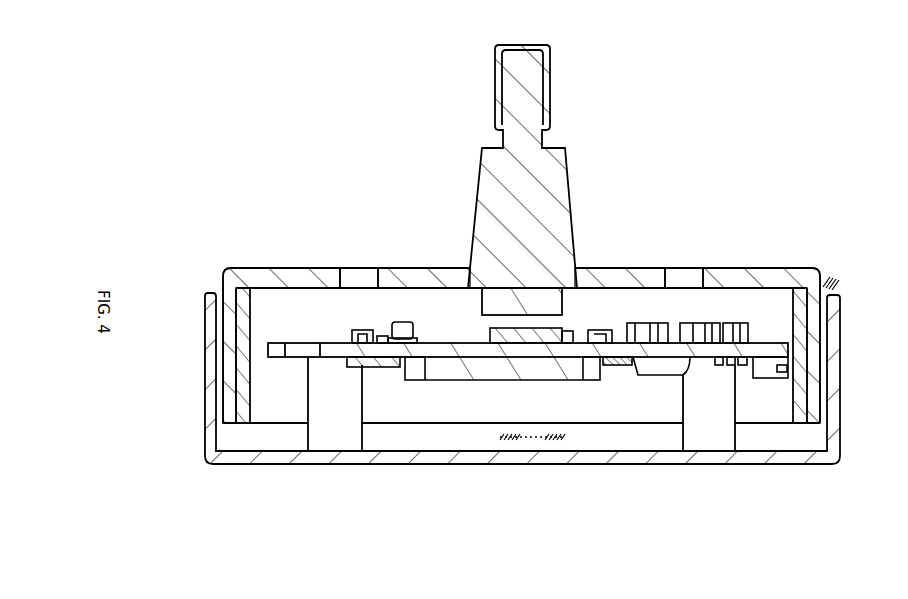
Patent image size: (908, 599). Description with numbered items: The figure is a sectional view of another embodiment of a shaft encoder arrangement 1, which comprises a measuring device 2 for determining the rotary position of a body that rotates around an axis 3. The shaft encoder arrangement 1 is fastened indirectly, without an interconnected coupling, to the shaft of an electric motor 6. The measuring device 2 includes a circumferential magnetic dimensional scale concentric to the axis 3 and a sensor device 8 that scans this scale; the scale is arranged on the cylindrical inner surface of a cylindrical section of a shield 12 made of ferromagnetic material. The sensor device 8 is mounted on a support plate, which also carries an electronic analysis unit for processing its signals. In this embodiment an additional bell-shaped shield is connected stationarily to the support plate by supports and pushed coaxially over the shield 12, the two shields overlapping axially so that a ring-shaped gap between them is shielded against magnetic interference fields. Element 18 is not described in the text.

The shaft encoder arrangement 1 is at (240, 358).
The measuring device 2 is at (808, 266).
The axis 3 is at (507, 363).
The electric motor 6 is at (532, 441).
The sensor device 8 is at (833, 282).
The shield 12 is at (832, 430).
The stanchion / spacer 18 is at (343, 437).